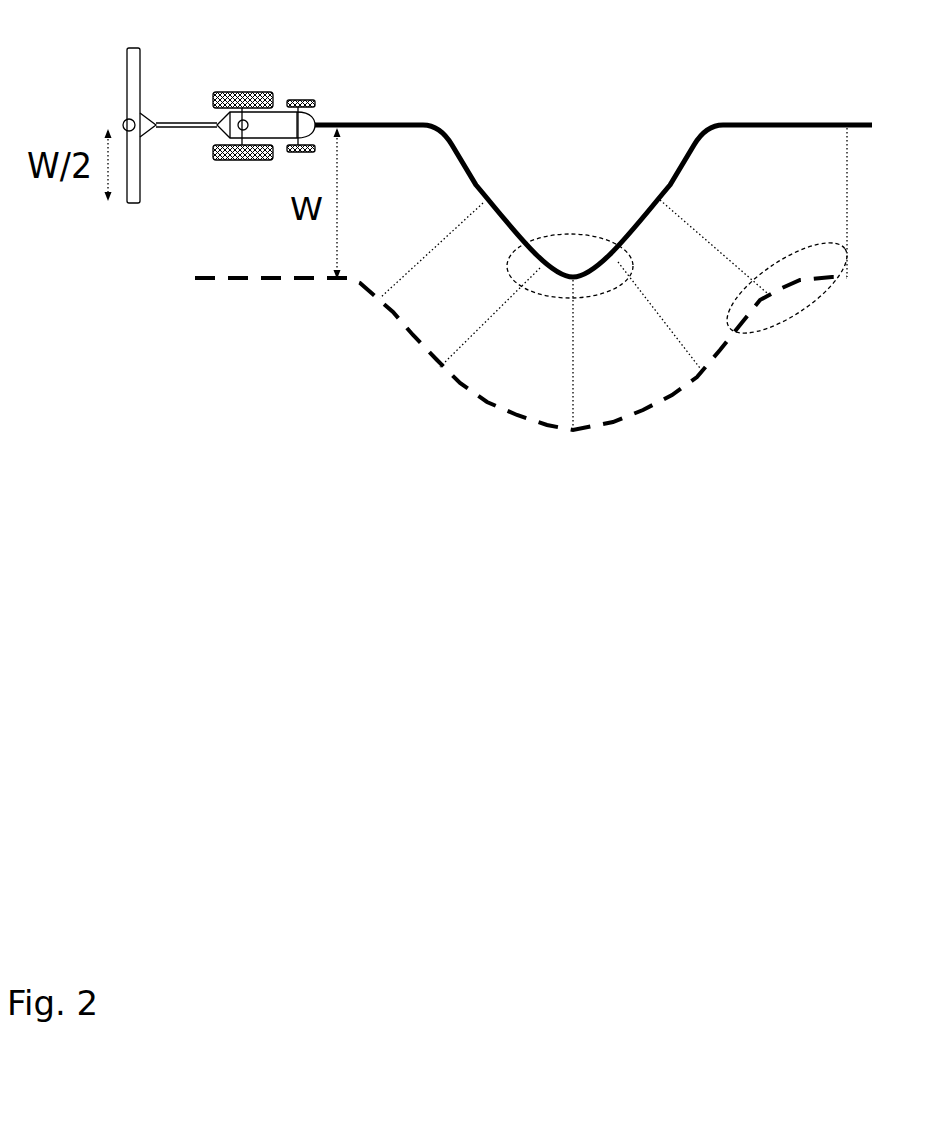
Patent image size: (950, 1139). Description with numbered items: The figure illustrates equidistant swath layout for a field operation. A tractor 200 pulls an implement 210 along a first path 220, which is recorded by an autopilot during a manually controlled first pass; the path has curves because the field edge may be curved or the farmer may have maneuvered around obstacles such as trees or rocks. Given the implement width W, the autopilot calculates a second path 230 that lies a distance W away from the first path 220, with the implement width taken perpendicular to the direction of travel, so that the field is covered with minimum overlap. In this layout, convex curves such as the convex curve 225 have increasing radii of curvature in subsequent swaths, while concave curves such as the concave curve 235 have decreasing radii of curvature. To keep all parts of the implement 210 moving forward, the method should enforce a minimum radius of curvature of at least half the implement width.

The tractor 200 is at (273, 121).
The implement 210 is at (139, 53).
The path 220 is at (447, 138).
The convex curve 225 is at (570, 254).
The second path 230 is at (396, 322).
The concave curve 235 is at (818, 302).